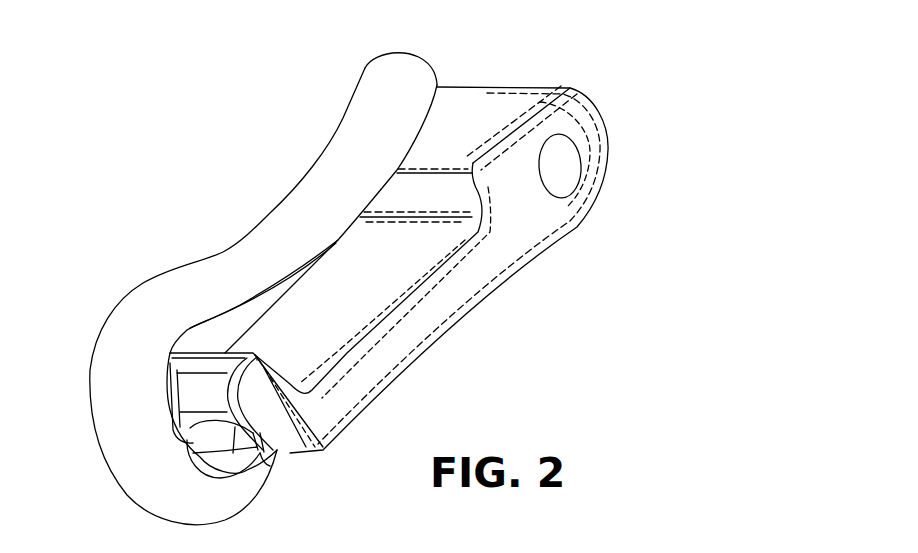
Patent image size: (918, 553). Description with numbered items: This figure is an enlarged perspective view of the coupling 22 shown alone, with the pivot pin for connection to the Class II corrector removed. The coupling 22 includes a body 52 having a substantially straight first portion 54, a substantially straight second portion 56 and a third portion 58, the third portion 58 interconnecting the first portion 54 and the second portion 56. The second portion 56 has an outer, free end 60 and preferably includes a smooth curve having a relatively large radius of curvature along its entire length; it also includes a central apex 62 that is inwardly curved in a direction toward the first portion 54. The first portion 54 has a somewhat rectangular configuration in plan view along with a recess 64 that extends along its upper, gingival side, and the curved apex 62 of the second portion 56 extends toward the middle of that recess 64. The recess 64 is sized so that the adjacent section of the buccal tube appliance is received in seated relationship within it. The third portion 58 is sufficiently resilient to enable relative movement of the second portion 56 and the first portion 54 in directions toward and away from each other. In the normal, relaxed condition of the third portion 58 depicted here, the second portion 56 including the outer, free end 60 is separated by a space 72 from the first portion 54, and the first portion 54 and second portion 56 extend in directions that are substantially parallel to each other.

The coupling 22 is at (178, 165).
The body 52 is at (524, 266).
The first portion 54 is at (417, 328).
The second portion 56 is at (230, 260).
The third portion 58 is at (110, 447).
The outer, free end 60 is at (407, 52).
The central apex 62 is at (323, 183).
The recess 64 is at (353, 313).
The space 72 is at (425, 133).